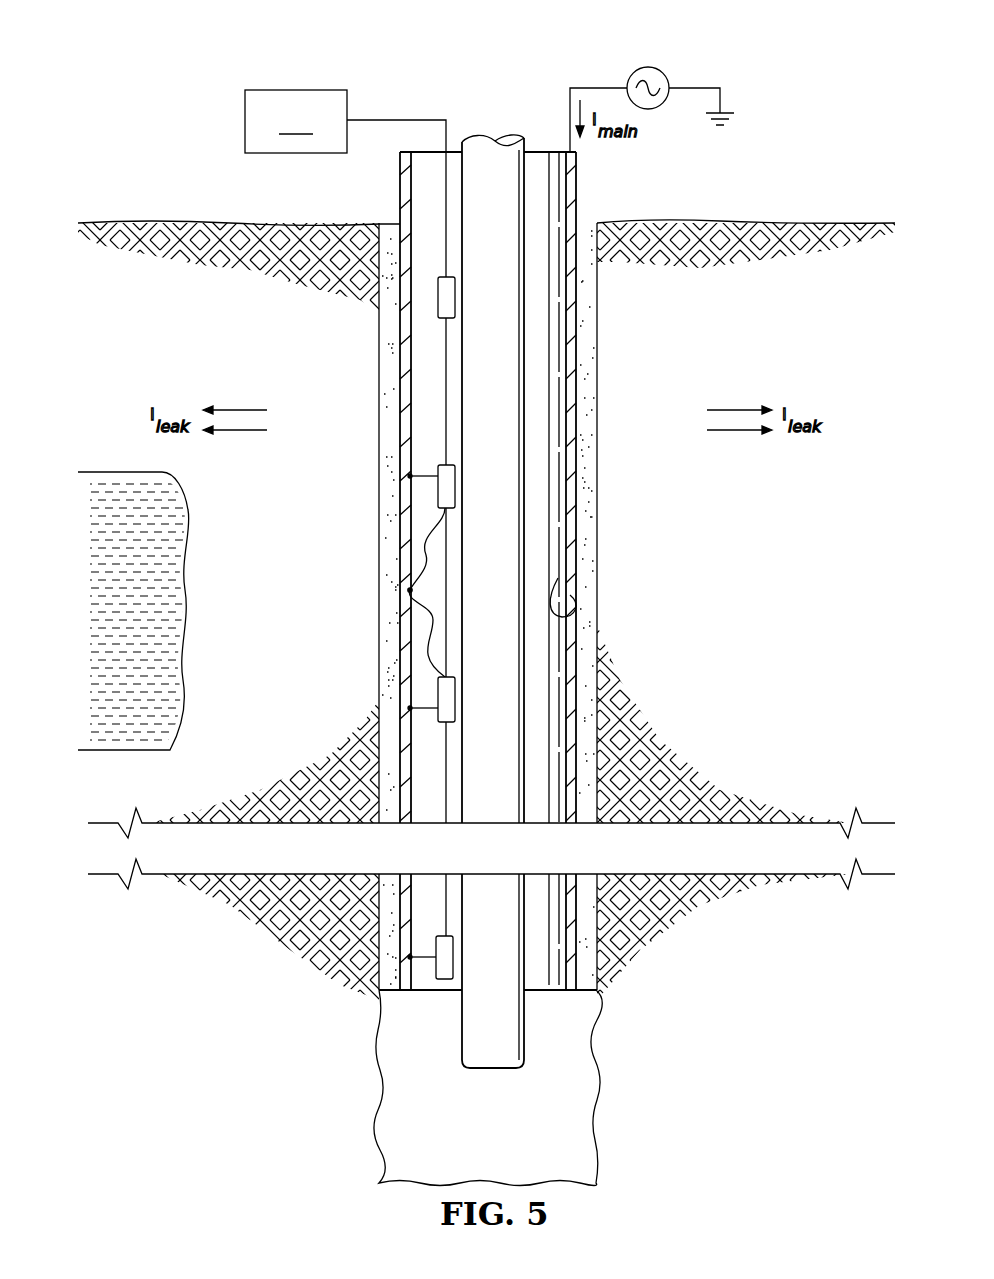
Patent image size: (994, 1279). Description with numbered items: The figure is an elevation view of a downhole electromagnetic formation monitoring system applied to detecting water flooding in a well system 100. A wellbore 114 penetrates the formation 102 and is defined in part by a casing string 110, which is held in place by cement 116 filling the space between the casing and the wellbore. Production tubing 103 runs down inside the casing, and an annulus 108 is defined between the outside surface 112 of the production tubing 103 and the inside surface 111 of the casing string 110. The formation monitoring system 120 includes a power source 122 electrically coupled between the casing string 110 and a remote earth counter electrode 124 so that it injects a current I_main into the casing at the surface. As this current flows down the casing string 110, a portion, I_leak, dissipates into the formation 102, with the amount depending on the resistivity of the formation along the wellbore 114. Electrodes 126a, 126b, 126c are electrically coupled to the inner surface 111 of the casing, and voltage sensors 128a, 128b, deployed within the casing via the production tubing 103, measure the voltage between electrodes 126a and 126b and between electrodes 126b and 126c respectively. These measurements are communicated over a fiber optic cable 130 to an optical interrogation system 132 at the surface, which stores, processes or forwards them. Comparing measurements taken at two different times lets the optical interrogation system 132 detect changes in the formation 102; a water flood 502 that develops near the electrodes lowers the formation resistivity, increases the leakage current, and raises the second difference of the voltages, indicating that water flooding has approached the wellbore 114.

The well system 100 is at (575, 63).
The formation 102 is at (742, 630).
The production tubing 103 is at (500, 366).
The annulus 108 is at (550, 303).
The casing string 110 is at (400, 376).
The inside surface 111 is at (573, 613).
The outside surface 112 is at (462, 1013).
The wellbore 114 is at (331, 1102).
The cement 116 is at (588, 464).
The formation monitoring system 120 is at (272, 164).
The power source 122 is at (648, 66).
The remote earth counter electrode 124 is at (736, 118).
The electrode 126a is at (410, 477).
The electrode 126b is at (410, 590).
The electrode 126c is at (410, 708).
The voltage sensor 128a is at (440, 468).
The voltage sensor 128b is at (440, 682).
The fiber optic cable 130 is at (390, 120).
The optical interrogation system 132 is at (296, 121).
The water flood 502 is at (187, 620).